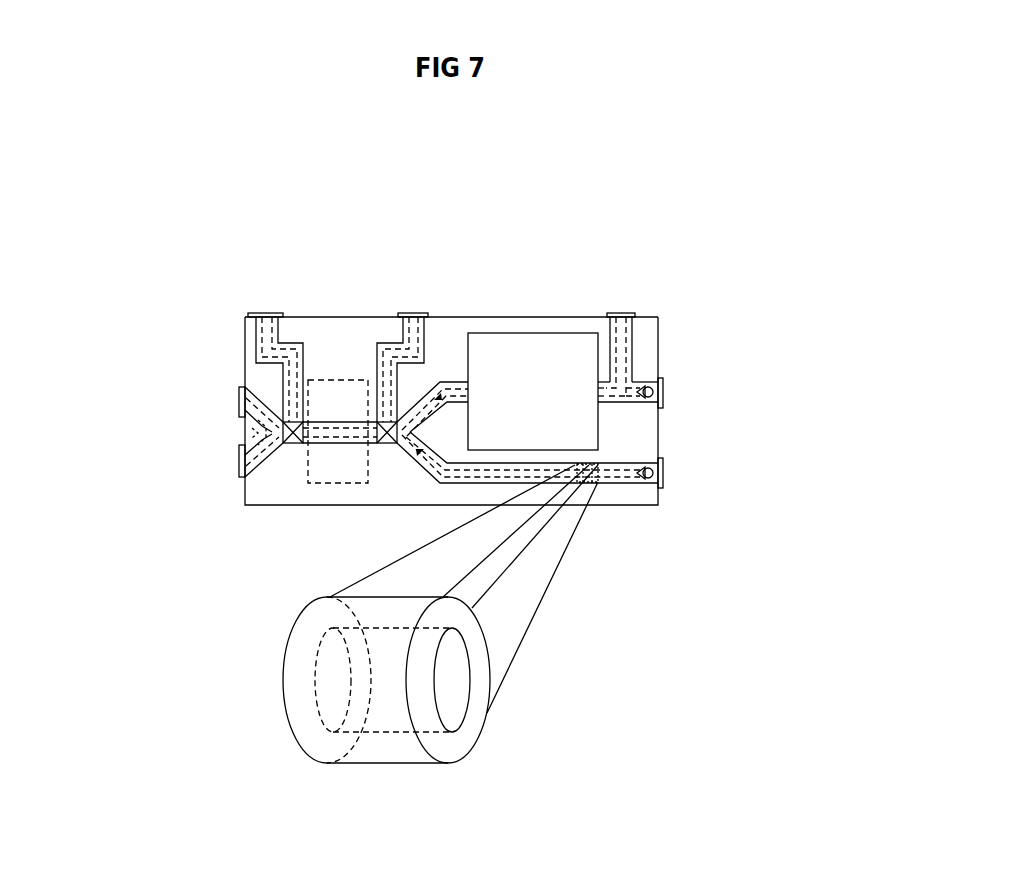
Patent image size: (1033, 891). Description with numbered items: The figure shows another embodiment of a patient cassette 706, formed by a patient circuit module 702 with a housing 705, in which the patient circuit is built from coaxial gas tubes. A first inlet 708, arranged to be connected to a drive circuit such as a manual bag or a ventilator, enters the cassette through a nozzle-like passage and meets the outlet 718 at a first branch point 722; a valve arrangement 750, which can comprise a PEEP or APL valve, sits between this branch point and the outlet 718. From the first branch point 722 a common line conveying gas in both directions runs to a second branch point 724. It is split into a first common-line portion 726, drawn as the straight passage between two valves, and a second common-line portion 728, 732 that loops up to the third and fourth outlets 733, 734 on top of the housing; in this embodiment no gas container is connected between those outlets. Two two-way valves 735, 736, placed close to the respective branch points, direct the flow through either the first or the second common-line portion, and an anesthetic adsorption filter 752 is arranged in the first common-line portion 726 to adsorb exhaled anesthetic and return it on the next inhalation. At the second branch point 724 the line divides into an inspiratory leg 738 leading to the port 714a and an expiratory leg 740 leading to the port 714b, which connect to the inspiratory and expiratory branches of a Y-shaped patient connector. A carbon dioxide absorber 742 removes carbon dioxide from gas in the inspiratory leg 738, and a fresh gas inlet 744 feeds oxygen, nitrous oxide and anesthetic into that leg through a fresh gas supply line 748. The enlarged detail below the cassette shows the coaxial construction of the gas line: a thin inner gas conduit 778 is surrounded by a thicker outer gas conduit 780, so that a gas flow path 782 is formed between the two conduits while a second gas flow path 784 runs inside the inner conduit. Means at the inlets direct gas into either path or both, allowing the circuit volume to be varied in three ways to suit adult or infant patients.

The patient circuit module 702 is at (650, 201).
The housing 705 is at (313, 317).
The patient cassette 706 is at (320, 363).
The first inlet 708 is at (243, 392).
The second inlet (inspiratory) 714a is at (662, 395).
The second inlet (expiratory) 714b is at (662, 478).
The outlet 718 is at (242, 457).
The first branch point 722 is at (268, 423).
The second branch point 724 is at (397, 444).
The first common-line portion 726 is at (333, 444).
The second common-line portion 728 is at (257, 350).
The second common-line portion 732 is at (425, 328).
The third outlet 733 is at (247, 313).
The fourth outlet 734 is at (429, 317).
The first two-way valve 735 is at (289, 444).
The second two-way valve 736 is at (377, 444).
The inspiratory leg 738 is at (608, 382).
The expiratory leg 740 is at (622, 462).
The carbon dioxide absorber 742 is at (514, 401).
The fresh gas inlet 744 is at (628, 312).
The fresh gas supply line 748 is at (632, 355).
The valve arrangement 750 is at (276, 451).
The anesthetic adsorption filter 752 is at (310, 484).
The inner gas conduit 778 is at (613, 483).
The outer gas conduit 780 is at (632, 488).
The gas flow path 782 is at (478, 642).
The gas flow path 784 is at (458, 680).